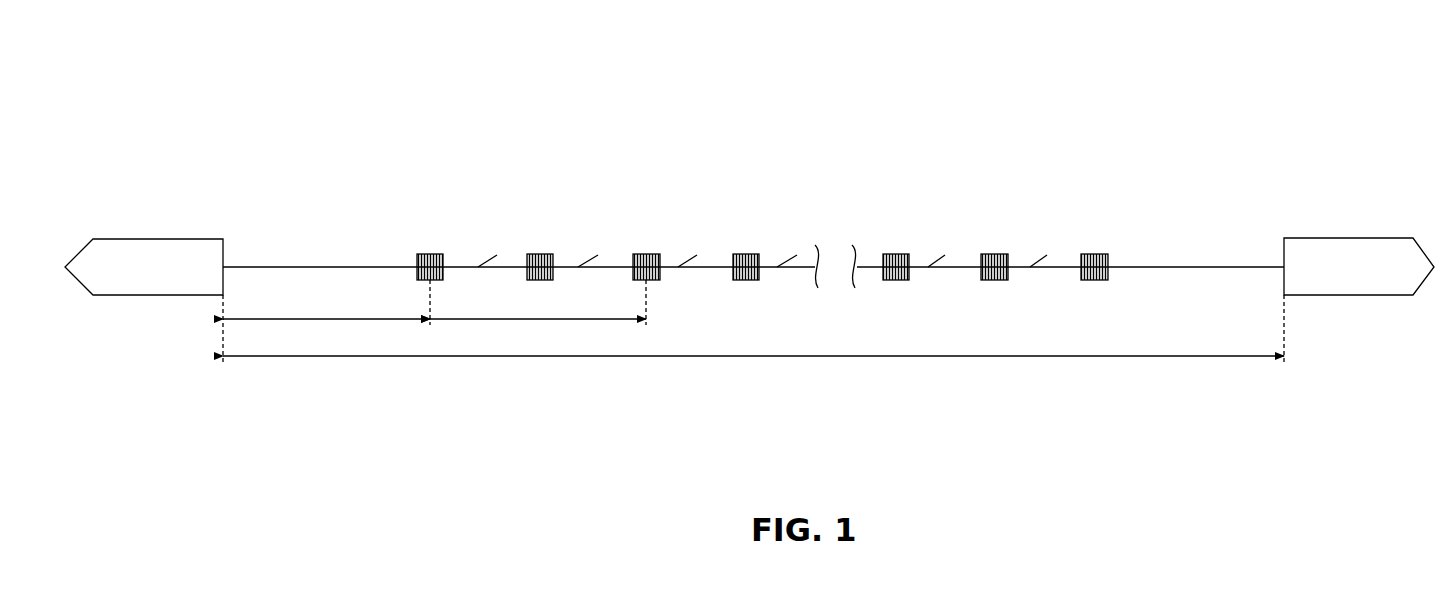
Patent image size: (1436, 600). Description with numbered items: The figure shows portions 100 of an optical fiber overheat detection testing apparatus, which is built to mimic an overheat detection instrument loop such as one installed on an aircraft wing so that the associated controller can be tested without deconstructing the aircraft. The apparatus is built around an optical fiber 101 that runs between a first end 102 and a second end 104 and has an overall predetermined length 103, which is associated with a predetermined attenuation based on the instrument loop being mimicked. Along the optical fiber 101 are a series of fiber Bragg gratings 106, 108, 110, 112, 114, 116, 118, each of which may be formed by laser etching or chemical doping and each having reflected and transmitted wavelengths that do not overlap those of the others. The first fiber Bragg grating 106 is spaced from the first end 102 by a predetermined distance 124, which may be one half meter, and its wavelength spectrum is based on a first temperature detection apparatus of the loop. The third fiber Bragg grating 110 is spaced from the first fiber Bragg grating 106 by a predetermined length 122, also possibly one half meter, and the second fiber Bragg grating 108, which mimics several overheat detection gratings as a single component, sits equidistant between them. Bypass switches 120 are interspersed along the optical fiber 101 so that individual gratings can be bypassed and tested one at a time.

The portions of optical fiber overheat detection testing apparatus 100 is at (156, 108).
The optical fiber 101 is at (318, 265).
The first end 102 is at (158, 238).
The predetermined length 103 is at (753, 357).
The second end 104 is at (1348, 238).
The first fiber Bragg grating 106 is at (430, 254).
The second fiber Bragg grating 108 is at (540, 254).
The third fiber Bragg grating 110 is at (646, 254).
The fiber Bragg grating 112 is at (746, 254).
The fiber Bragg grating 114 is at (896, 254).
The fiber Bragg grating 116 is at (994, 254).
The fiber Bragg grating 118 is at (1094, 254).
The bypass switches 120 is at (483, 258).
The predetermined length 122 is at (570, 297).
The predetermined distance 124 is at (318, 318).